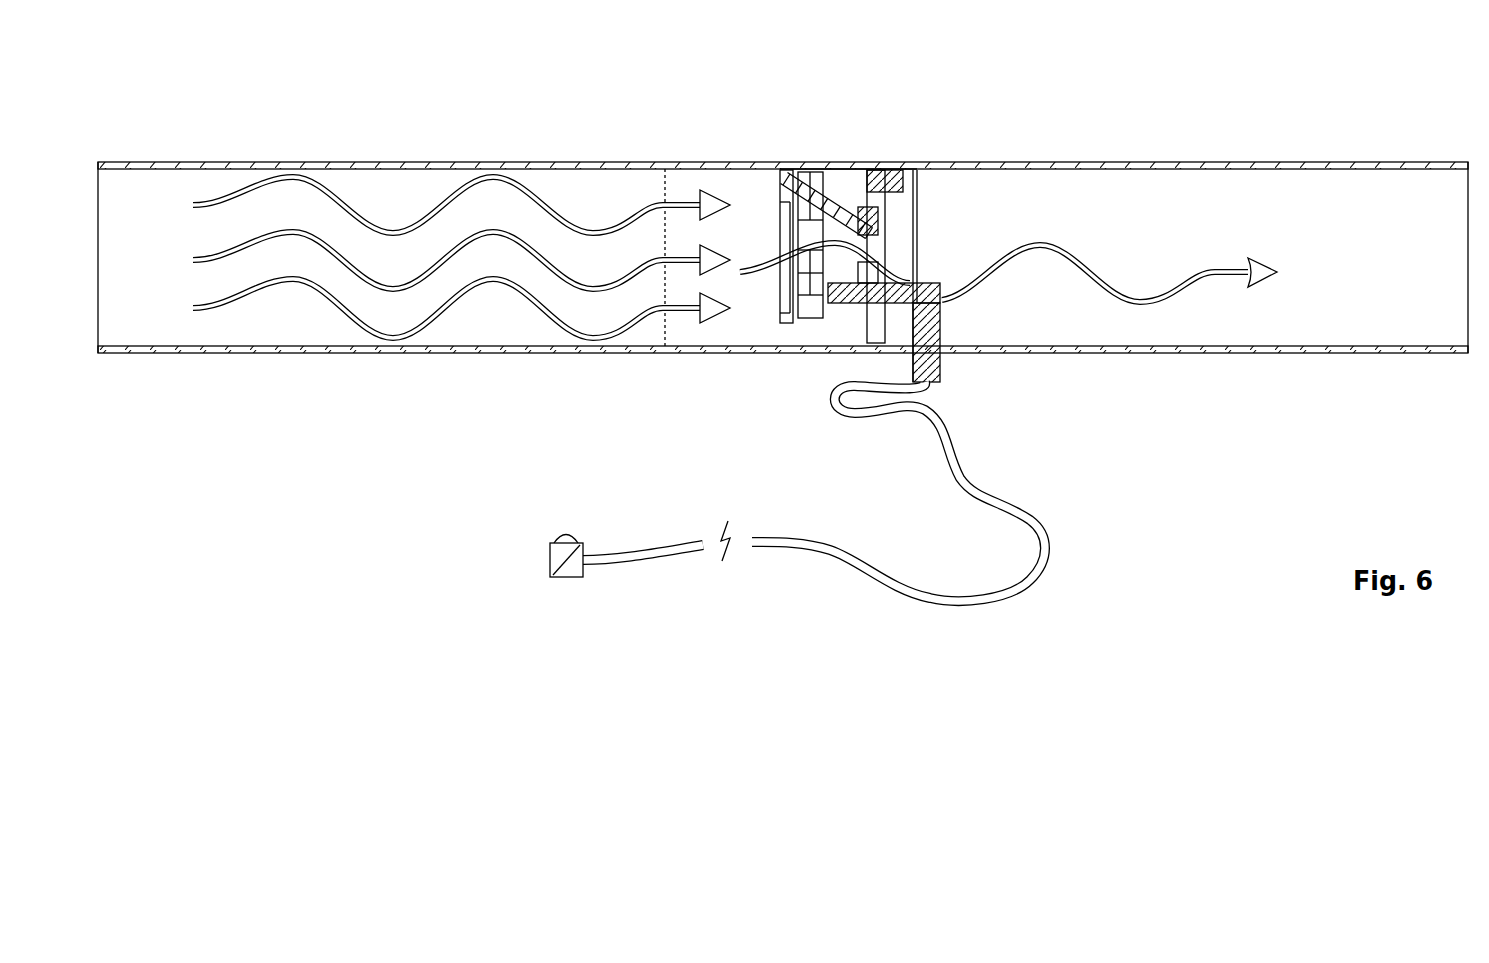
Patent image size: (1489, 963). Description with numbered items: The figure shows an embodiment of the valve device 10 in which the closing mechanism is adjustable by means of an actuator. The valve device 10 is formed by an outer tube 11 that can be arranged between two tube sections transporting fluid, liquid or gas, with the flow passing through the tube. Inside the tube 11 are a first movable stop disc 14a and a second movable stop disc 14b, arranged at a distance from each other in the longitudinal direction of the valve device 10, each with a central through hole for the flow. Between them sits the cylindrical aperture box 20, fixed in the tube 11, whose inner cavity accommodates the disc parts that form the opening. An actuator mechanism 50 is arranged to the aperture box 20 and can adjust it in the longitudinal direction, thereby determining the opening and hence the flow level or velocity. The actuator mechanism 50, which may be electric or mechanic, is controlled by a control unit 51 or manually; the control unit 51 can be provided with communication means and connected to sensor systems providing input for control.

The valve device 10 is at (748, 151).
The outer tube 11 is at (848, 162).
The first movable stop disc 14a is at (782, 320).
The second movable stop disc 14b is at (887, 177).
The aperture box 20 is at (802, 316).
The actuator mechanism 50 is at (840, 316).
The control unit 51 is at (555, 556).